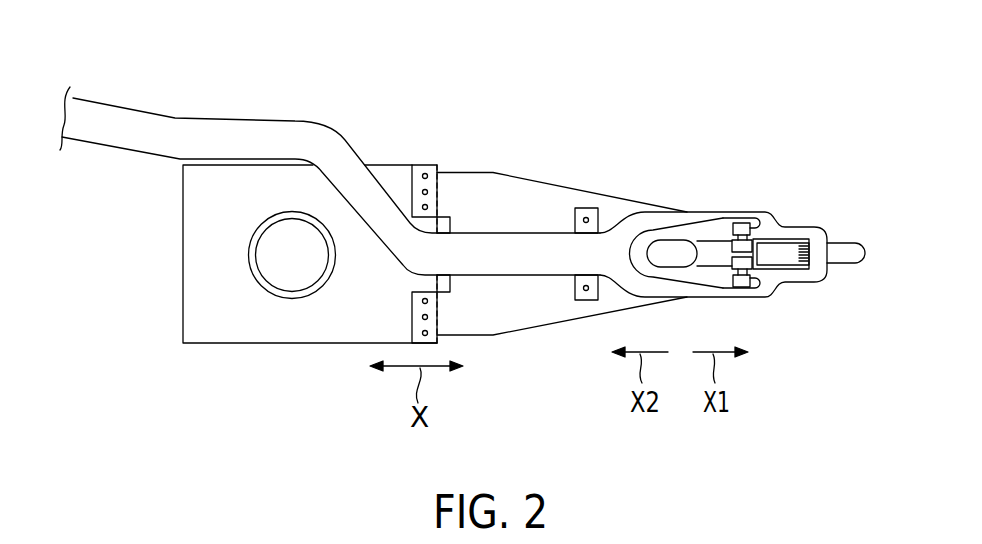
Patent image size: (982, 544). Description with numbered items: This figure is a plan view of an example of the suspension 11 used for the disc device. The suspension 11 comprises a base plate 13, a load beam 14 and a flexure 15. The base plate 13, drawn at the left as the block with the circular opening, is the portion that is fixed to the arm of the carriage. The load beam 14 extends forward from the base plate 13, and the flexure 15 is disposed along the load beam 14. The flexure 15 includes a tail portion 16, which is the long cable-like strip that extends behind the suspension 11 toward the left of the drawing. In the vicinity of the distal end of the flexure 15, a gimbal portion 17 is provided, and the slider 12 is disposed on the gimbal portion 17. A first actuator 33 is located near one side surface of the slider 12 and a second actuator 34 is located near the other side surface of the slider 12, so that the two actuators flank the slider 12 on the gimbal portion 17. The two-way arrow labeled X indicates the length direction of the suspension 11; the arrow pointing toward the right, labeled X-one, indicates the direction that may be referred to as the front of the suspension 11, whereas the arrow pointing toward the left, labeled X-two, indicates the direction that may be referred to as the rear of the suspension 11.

The suspension 11 is at (545, 184).
The slider 12 is at (788, 252).
The base plate 13 is at (295, 327).
The load beam 14 is at (520, 330).
The flexure 15 is at (707, 210).
The tail portion 16 is at (85, 98).
The gimbal portion 17 is at (788, 283).
The first actuator 33 is at (742, 222).
The second actuator 34 is at (744, 287).